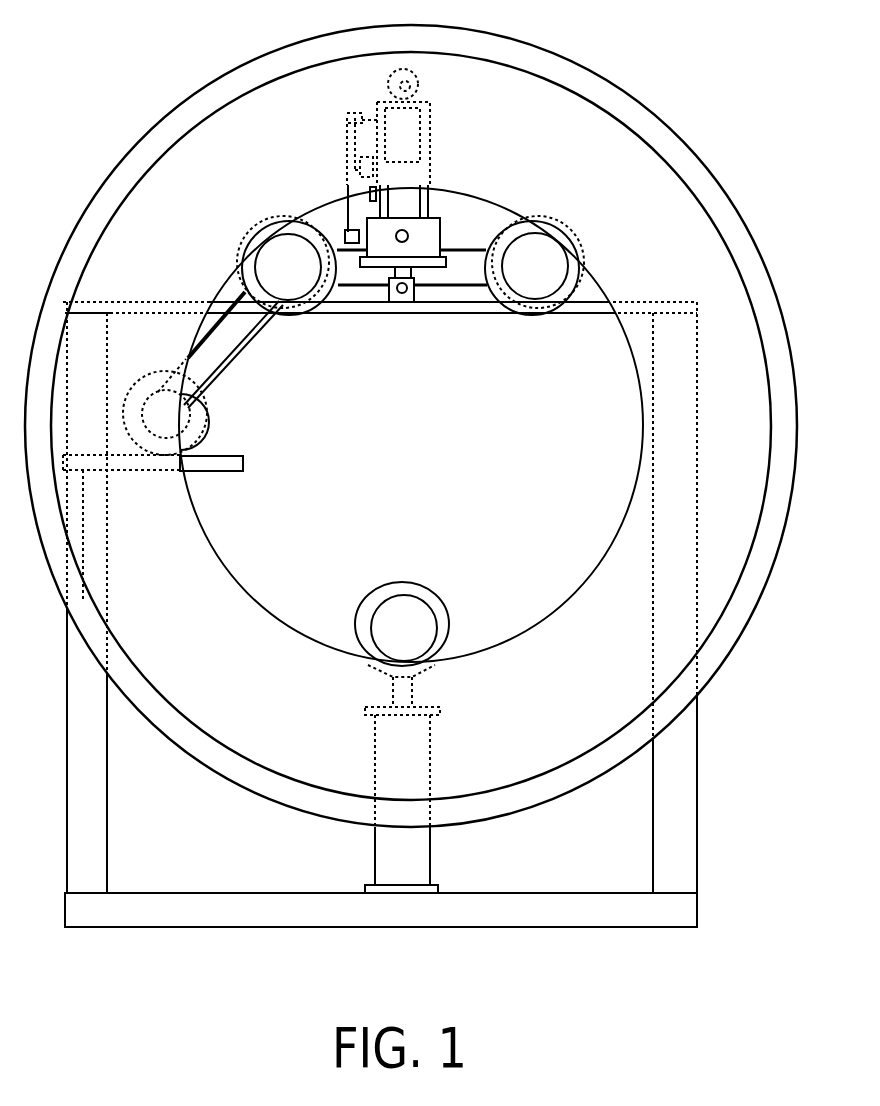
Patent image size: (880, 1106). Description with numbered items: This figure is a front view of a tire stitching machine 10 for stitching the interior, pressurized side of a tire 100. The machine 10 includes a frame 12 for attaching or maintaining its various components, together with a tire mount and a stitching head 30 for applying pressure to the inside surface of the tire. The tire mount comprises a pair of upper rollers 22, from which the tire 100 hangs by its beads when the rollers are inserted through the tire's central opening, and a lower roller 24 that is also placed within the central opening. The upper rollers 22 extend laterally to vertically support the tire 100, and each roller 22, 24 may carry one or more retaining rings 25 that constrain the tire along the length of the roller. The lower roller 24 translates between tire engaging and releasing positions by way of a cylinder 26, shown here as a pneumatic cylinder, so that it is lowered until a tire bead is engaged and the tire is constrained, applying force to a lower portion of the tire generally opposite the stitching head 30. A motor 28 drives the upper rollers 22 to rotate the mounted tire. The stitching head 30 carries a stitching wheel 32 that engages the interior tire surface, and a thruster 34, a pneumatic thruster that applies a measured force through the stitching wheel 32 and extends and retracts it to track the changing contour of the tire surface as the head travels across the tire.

The tire stitching machine 10 is at (160, 76).
The tire 100 is at (105, 181).
The frame 12 is at (142, 918).
The upper rollers 22 is at (298, 290).
The lower roller 24 is at (412, 608).
The retaining rings 25 is at (323, 293).
The cylinder 26 is at (417, 857).
The motor 28 is at (200, 428).
The stitching head 30 is at (318, 162).
The stitching wheel 32 is at (394, 74).
The thruster 34 is at (402, 136).